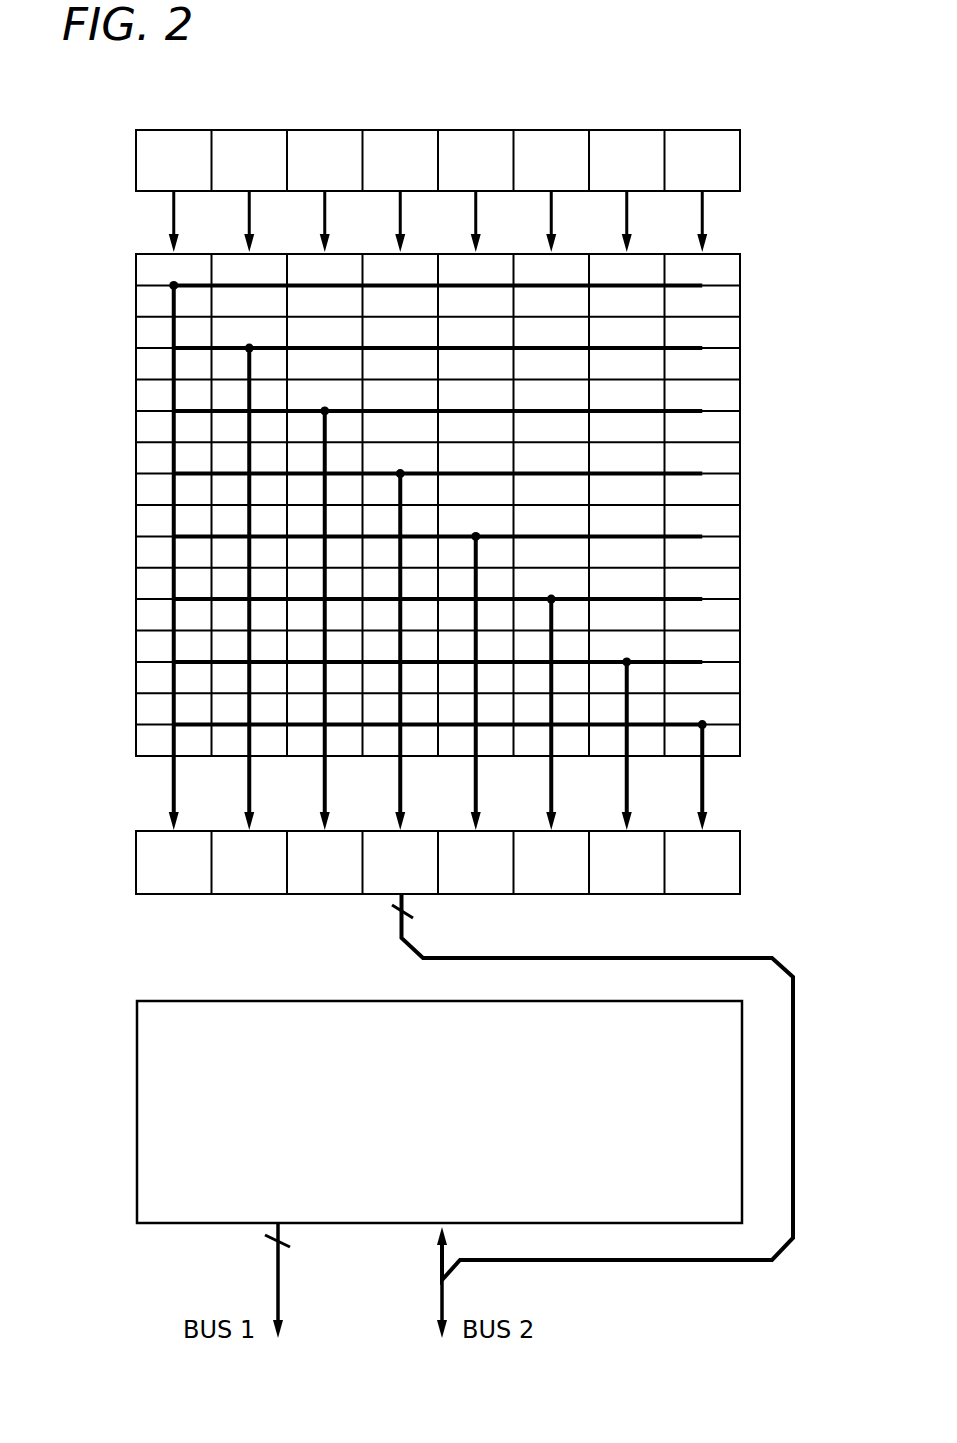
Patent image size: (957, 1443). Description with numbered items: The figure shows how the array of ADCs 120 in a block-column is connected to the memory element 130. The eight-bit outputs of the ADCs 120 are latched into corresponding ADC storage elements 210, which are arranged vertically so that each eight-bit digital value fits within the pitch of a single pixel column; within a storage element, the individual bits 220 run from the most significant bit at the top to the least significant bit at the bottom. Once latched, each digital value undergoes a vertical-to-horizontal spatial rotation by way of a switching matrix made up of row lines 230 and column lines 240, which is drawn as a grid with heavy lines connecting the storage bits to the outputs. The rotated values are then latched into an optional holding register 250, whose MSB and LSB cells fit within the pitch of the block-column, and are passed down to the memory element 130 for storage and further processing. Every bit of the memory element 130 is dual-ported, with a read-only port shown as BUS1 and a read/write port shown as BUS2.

The array of ADCs 120 is at (722, 107).
The ADC storage elements 210 is at (767, 262).
The bits of ADC storage element 220 is at (145, 715).
The row lines 230 is at (688, 286).
The column lines 240 is at (768, 778).
The holding register 250 is at (137, 853).
The memory element 130 is at (178, 1001).